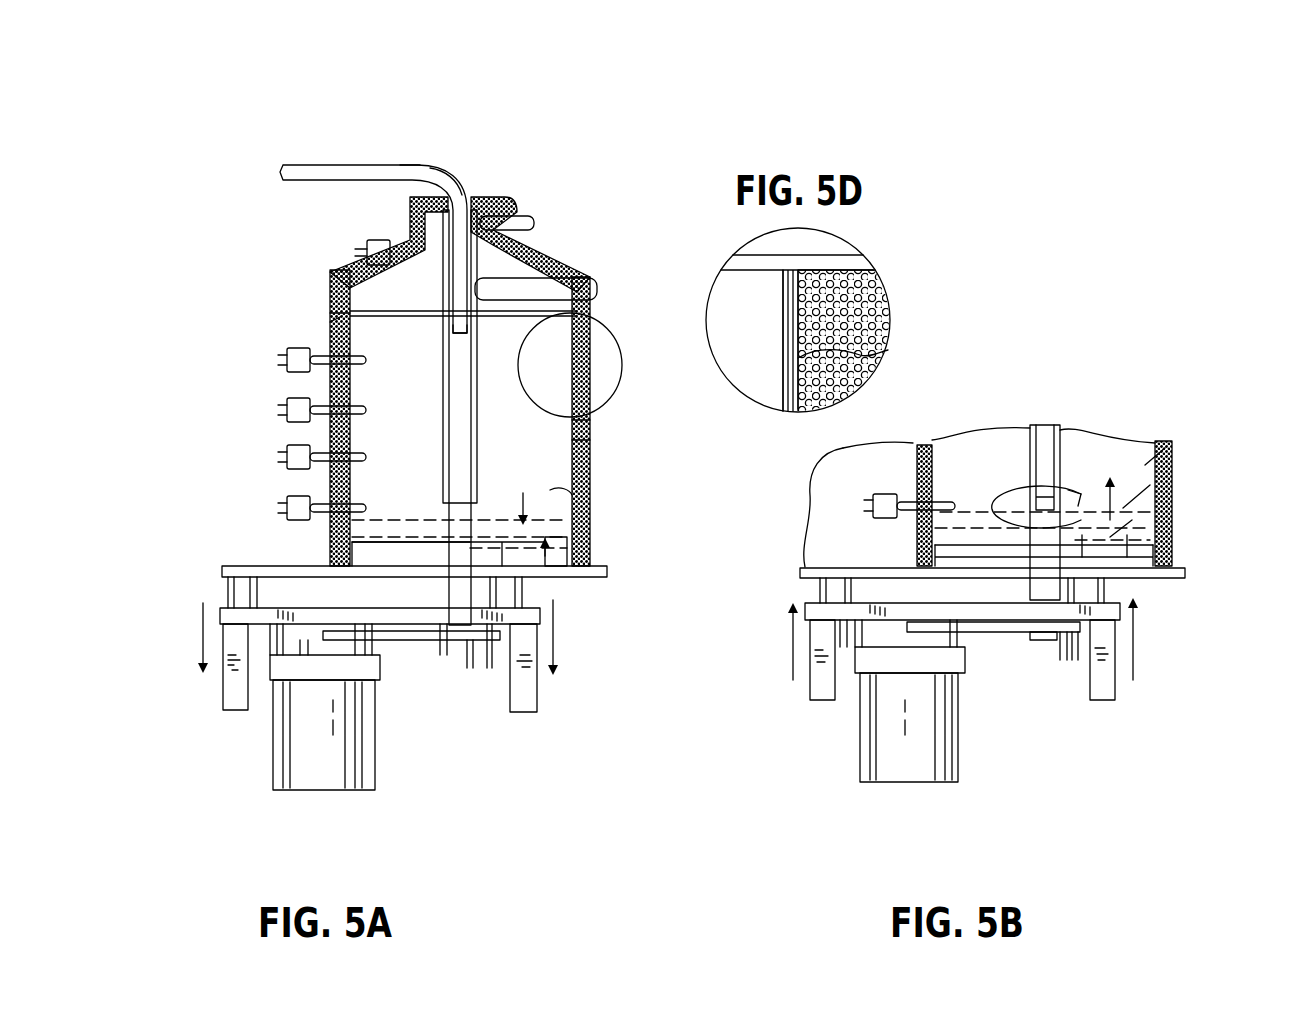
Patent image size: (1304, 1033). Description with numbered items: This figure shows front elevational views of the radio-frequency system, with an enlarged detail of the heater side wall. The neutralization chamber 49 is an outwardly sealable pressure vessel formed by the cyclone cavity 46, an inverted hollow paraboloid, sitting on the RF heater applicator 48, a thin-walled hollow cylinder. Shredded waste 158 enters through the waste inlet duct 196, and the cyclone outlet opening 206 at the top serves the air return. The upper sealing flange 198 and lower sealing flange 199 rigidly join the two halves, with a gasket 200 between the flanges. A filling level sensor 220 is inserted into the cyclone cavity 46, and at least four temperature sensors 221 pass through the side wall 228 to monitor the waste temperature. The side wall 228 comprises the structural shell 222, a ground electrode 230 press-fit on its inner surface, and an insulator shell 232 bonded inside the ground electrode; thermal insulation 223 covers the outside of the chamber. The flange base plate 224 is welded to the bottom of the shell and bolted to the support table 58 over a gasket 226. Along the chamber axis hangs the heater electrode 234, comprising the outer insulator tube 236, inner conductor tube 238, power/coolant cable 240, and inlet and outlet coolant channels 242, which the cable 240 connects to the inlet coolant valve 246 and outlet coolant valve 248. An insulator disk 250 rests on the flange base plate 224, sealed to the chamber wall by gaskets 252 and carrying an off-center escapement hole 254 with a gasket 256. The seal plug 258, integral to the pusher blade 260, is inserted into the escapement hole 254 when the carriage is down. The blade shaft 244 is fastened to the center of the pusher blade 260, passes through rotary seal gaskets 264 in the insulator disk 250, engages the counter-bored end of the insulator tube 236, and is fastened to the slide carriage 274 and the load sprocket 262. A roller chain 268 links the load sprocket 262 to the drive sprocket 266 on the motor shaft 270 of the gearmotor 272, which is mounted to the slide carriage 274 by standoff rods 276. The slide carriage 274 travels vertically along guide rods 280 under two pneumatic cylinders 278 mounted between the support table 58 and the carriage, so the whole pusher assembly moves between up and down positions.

In FIG. 5A, the cyclone cavity 46 is at (363, 278).
In FIG. 5A, the RF heater applicator 48 is at (583, 470).
In FIG. 5A, the neutralization chamber 49 is at (367, 264).
In FIG. 5D, the neutralization chamber 49 is at (775, 122).
In FIG. 5A, the support table 58 is at (222, 573).
In FIG. 5A, the shredded waste 158 is at (560, 492).
In FIG. 5A, the waste inlet duct 196 is at (597, 288).
In FIG. 5A, the upper sealing flange 198 is at (352, 311).
In FIG. 5A, the lower sealing flange 199 is at (342, 316).
In FIG. 5A, the gasket 200 is at (340, 313).
In FIG. 5A, the cyclone outlet opening 206 is at (510, 215).
In FIG. 5A, the neutralization chamber filling level sensor 220 is at (378, 240).
In FIG. 5A, the temperature sensors 221 is at (287, 362).
In FIG. 5D, the structural shell 222 is at (870, 360).
In FIG. 5D, the thermal insulation 223 is at (850, 315).
In FIG. 5A, the flange base plate 224 is at (345, 566).
In FIG. 5A, the gasket 226 is at (338, 567).
In FIG. 5A, the side wall 228 is at (590, 440).
In FIG. 5D, the ground electrode 230 is at (790, 410).
In FIG. 5D, the insulator shell 232 is at (783, 380).
In FIG. 5A, the heater electrode 234 is at (457, 417).
In FIG. 5B, the outer insulator tube 236 is at (1063, 458).
In FIG. 5B, the inner conductor tube 238 is at (1043, 430).
In FIG. 5A, the power/coolant cable 240 is at (468, 183).
In FIG. 5A, the inlet and outlet coolant channels 242 is at (412, 172).
In FIG. 5B, the blade shaft 244 is at (1043, 593).
In FIG. 5A, the inlet coolant valve 246 is at (472, 325).
In FIG. 5A, the outlet coolant valve 248 is at (480, 338).
In FIG. 5A, the insulator disk 250 is at (403, 620).
In FIG. 5B, the gaskets 252 is at (935, 535).
In FIG. 5B, the escapement hole 254 is at (1112, 553).
In FIG. 5B, the gasket 256 is at (1127, 537).
In FIG. 5B, the seal plug 258 is at (1177, 507).
In FIG. 5B, the pusher blade 260 is at (1180, 452).
In FIG. 5B, the load sprocket 262 is at (1017, 633).
In FIG. 5A, the rotary seal gaskets 264 is at (488, 637).
In FIG. 5B, the drive sprocket 266 is at (913, 643).
In FIG. 5B, the roller chain 268 is at (980, 627).
In FIG. 5B, the motor shaft 270 is at (927, 650).
In FIG. 5B, the gearmotor 272 is at (902, 740).
In FIG. 5A, the slide carriage 274 is at (230, 618).
In FIG. 5B, the slide carriage 274 is at (815, 615).
In FIG. 5A, the standoff rods 276 is at (278, 665).
In FIG. 5B, the pneumatic cylinders 278 is at (815, 663).
In FIG. 5B, the guide rods 280 is at (855, 667).